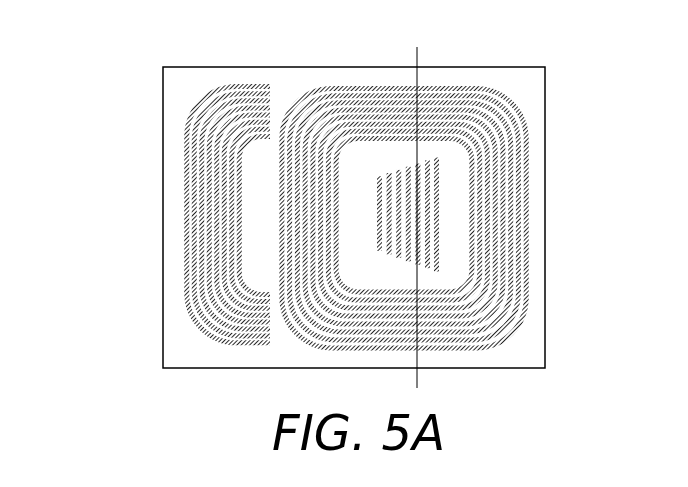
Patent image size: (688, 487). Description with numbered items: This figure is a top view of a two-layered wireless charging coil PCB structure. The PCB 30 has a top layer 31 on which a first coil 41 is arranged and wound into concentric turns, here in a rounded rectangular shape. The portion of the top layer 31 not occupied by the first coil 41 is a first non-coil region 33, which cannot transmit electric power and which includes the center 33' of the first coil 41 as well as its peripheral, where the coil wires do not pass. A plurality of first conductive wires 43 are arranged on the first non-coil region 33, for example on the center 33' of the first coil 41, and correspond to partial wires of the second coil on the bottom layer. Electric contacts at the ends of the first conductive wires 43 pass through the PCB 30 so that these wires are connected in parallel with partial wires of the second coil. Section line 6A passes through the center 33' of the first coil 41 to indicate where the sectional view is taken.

The PCB 30 is at (172, 228).
The top layer 31 is at (186, 91).
The first non-coil region 33 is at (84, 152).
The center of the first coil 33' is at (231, 196).
The first coil 41 is at (346, 86).
The first conductive wires 43 is at (185, 262).
The section line 6A- 6A is at (417, 47).